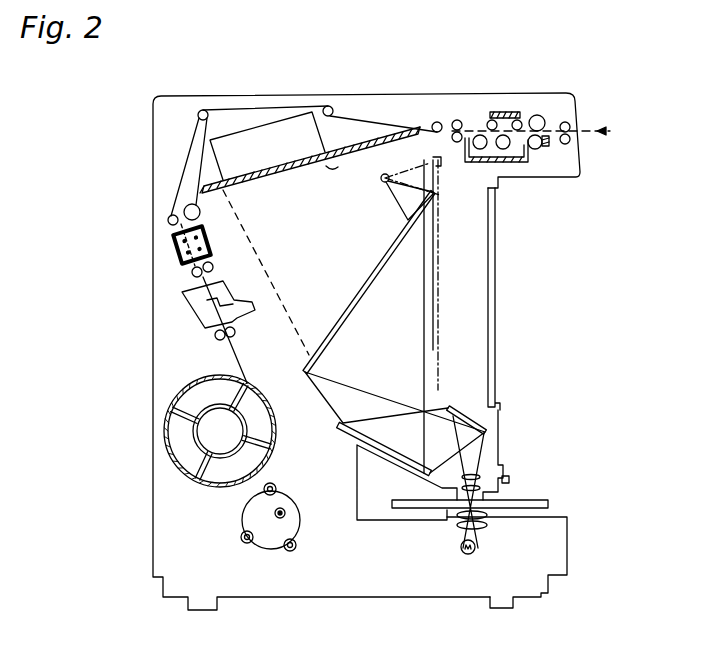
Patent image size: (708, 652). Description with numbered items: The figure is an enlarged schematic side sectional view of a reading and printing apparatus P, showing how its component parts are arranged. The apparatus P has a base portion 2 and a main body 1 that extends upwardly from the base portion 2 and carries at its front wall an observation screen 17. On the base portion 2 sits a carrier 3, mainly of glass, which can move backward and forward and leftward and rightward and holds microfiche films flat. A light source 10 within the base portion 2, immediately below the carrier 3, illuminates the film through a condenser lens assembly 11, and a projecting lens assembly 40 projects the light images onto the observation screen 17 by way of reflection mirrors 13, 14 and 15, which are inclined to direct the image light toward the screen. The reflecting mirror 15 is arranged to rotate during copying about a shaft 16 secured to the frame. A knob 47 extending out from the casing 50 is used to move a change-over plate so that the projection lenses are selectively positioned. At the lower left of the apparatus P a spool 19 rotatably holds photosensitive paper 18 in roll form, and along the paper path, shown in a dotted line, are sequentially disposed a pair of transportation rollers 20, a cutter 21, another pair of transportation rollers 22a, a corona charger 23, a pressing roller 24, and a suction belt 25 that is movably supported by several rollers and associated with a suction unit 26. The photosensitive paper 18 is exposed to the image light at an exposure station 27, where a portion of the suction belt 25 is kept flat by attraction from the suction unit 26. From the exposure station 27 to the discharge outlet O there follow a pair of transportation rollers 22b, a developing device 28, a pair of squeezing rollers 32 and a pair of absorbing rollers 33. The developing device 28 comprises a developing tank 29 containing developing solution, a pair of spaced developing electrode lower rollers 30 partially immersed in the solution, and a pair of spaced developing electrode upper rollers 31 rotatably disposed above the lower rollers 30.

The main body 1 is at (152, 262).
The base portion 2 is at (560, 580).
The carrier 3 is at (549, 504).
The light source 10 is at (478, 548).
The condenser lens assembly 11 is at (487, 525).
The reflection mirror 13 is at (458, 412).
The reflection mirror 14 is at (340, 436).
The reflection mirror 15 is at (392, 262).
The shaft 16 is at (381, 180).
The observation screen 17 is at (497, 312).
The photosensitive paper 18 is at (230, 368).
The spool 19 is at (165, 445).
The transportation rollers 20 is at (214, 336).
The cutter 21 is at (182, 300).
The transportation rollers 22a is at (190, 273).
The transportation rollers 22b is at (455, 122).
The corona charger 23 is at (174, 247).
The pressing roller 24 is at (183, 210).
The suction belt 25 is at (183, 152).
The suction unit 26 is at (262, 140).
The exposure station 27 is at (343, 148).
The developing device 28 is at (521, 108).
The developing tank 29 is at (468, 163).
The developing electrode lower rollers 30 is at (484, 150).
The developing electrode upper rollers 31 is at (515, 120).
The squeezing rollers 32 is at (540, 116).
The absorbing rollers 33 is at (572, 125).
The projecting lens assembly 40 is at (503, 468).
The knob 47 is at (509, 480).
The casing 50 is at (479, 470).
The discharge outlet O is at (578, 128).
The reading and printing apparatus P is at (587, 228).